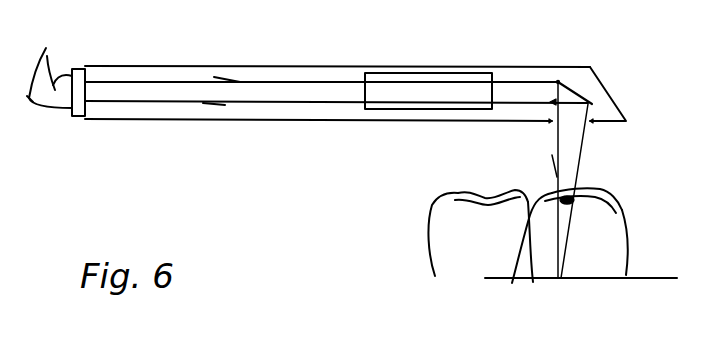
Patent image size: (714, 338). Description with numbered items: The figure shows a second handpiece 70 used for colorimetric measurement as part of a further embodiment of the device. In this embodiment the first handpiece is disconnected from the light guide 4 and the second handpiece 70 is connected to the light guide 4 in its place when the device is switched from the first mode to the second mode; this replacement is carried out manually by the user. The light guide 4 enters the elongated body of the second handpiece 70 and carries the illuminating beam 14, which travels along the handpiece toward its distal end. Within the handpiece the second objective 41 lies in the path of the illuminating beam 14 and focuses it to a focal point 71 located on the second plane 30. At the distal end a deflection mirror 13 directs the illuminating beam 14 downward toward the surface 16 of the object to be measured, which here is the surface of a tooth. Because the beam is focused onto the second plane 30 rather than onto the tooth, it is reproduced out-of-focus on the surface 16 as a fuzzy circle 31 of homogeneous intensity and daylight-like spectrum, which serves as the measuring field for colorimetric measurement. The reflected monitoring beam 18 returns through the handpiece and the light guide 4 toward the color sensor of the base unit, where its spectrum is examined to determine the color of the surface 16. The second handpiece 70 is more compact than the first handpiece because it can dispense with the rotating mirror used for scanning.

The light guide 4 is at (53, 70).
The illuminating beam 14 is at (163, 82).
The monitoring beam 18 is at (172, 101).
The second handpiece 70 is at (283, 65).
The second objective 41 is at (392, 79).
The deflection mirror 13 is at (584, 83).
The fuzzy circle 31 is at (574, 192).
The surface of the object to be measured 16 is at (610, 196).
The focal point 71 is at (563, 279).
The second plane 30 is at (640, 279).